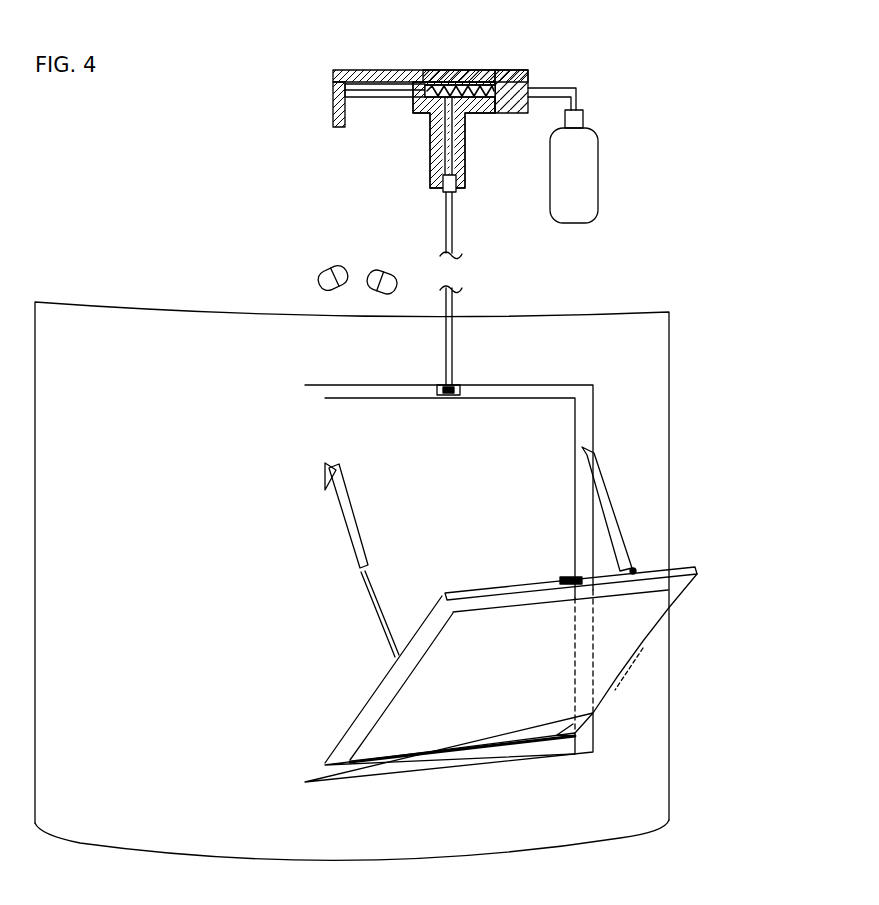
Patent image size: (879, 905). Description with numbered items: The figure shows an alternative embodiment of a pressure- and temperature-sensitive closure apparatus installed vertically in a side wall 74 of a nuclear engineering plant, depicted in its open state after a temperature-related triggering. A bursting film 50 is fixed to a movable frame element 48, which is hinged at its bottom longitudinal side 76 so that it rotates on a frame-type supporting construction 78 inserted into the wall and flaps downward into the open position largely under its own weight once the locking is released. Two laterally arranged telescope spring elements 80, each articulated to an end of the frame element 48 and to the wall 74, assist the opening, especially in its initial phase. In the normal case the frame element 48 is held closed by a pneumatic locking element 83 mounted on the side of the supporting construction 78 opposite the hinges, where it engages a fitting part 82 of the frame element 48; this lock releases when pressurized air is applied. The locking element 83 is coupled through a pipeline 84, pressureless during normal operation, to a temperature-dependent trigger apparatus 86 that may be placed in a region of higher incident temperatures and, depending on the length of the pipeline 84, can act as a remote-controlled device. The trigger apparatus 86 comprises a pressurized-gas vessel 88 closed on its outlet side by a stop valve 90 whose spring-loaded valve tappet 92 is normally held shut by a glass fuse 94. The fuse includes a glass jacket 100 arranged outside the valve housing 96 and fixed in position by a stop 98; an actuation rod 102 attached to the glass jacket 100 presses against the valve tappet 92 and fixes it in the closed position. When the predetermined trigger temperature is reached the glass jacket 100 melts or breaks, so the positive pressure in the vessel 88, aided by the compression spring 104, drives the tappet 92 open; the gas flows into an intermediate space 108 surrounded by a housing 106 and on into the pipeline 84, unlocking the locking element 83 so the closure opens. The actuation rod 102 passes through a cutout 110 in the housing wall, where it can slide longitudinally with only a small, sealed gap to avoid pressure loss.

The frame element 48 is at (700, 570).
The bursting film 50 is at (628, 636).
The side wall 74 is at (627, 366).
The bottom longitudinal side 76 is at (450, 766).
The frame-type supporting construction 78 is at (330, 428).
The telescope spring elements 80 is at (345, 520).
The fitting part 82 is at (568, 578).
The locking element 83 is at (449, 397).
The pipeline 84 is at (455, 220).
The temperature-dependent trigger apparatus 86 is at (235, 127).
The pressurized-gas vessel 88 is at (600, 165).
The stop valve 90 is at (505, 70).
The valve tappet 92 is at (425, 85).
The glass fuse 94 is at (336, 150).
The valve housing 96 is at (530, 72).
The stop 98 is at (333, 97).
The glass jacket 100 is at (375, 270).
The actuation rod 102 is at (387, 97).
The compression spring 104 is at (505, 113).
The housing 106 is at (432, 178).
The intermediate space 108 is at (455, 70).
The cutout 110 is at (395, 70).